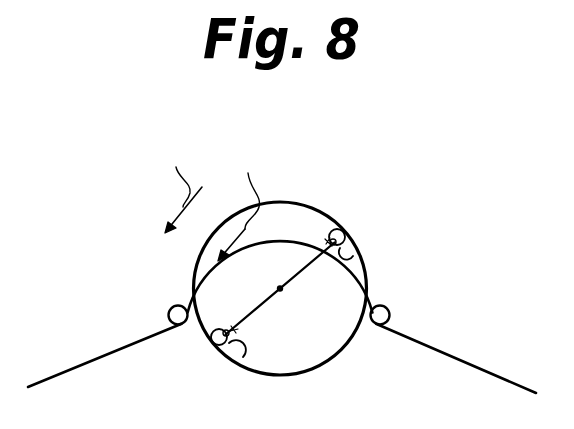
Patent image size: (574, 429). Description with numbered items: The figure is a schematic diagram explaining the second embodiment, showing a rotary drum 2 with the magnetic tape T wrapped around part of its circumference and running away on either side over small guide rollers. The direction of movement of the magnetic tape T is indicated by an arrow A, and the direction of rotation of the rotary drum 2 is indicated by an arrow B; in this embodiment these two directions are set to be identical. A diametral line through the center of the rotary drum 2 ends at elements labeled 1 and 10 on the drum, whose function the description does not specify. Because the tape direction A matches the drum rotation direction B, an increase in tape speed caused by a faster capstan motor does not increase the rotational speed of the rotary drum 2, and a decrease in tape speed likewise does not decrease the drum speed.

The clamp / shaft 1 is at (240, 365).
The rotary drum 2 is at (325, 362).
The clamp 10 is at (362, 250).
The arrow A is at (183, 186).
The arrow B is at (238, 203).
The magnetic tape T is at (70, 370).